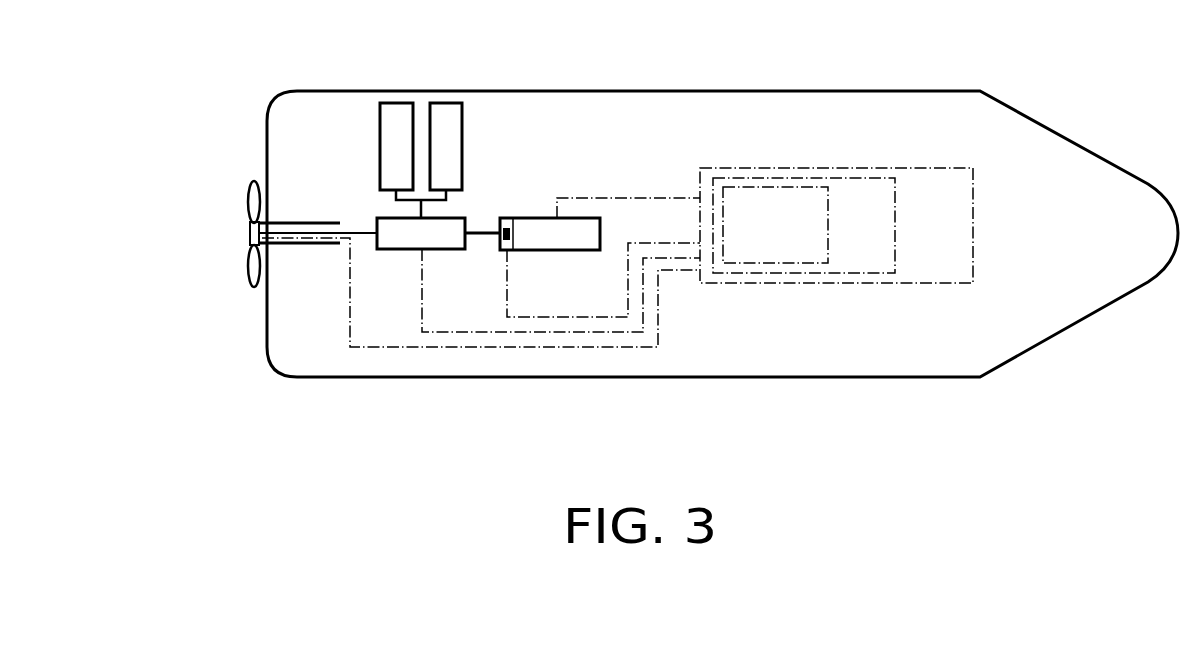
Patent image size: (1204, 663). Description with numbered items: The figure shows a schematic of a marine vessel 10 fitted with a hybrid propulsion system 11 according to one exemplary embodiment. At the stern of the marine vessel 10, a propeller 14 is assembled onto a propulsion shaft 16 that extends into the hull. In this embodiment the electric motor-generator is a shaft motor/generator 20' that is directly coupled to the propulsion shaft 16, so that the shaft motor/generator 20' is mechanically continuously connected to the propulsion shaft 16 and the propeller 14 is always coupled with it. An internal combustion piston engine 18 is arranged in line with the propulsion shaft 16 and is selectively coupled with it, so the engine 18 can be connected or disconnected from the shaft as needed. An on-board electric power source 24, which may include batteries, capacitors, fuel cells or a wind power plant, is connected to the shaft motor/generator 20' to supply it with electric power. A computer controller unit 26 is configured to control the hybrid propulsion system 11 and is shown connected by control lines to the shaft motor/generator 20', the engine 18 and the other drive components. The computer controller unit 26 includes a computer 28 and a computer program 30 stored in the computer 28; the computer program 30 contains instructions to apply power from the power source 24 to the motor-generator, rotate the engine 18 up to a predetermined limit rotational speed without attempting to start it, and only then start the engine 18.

The marine vessel 10 is at (773, 89).
The hybrid propulsion system 11 is at (500, 118).
The propeller 14 is at (252, 195).
The propulsion shaft 16 is at (367, 233).
The internal combustion piston engine 18 is at (570, 247).
The shaft motor/generator 20' is at (421, 233).
The on-board electric power source 24 is at (384, 97).
The computer controller unit 26 is at (948, 213).
The computer 28 is at (847, 239).
The computer program 30 is at (790, 239).